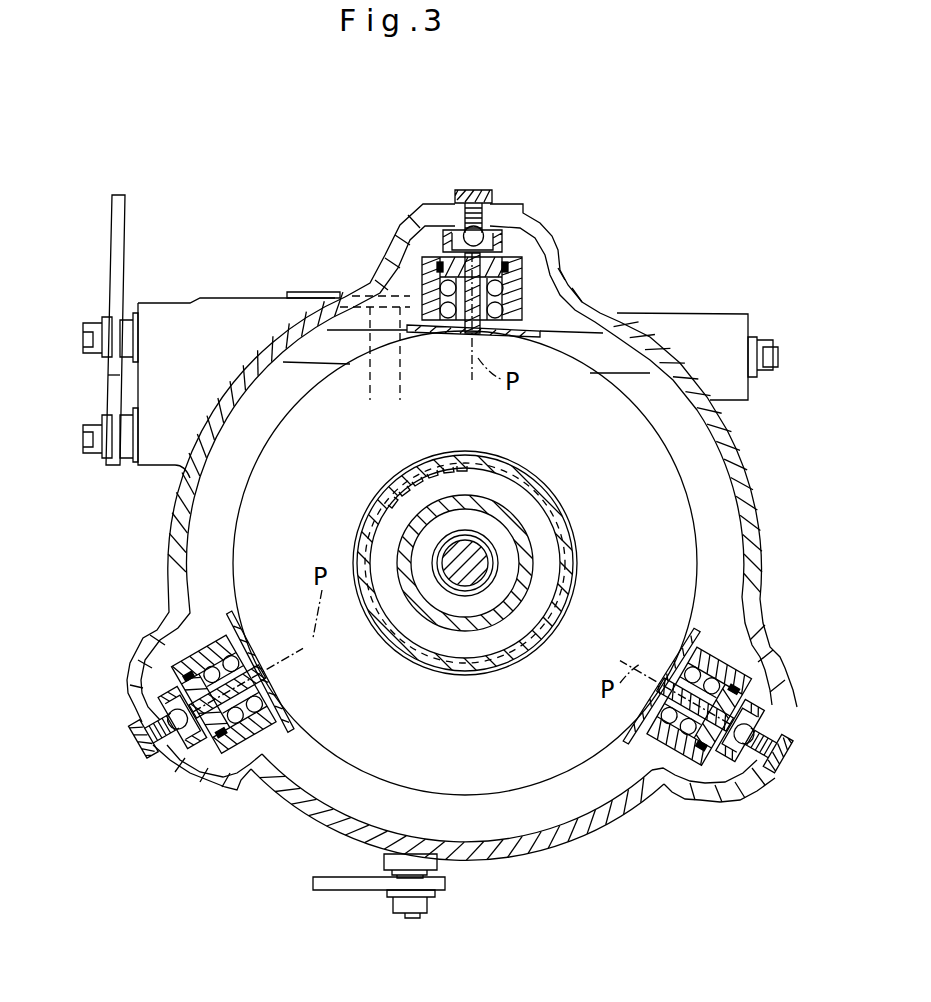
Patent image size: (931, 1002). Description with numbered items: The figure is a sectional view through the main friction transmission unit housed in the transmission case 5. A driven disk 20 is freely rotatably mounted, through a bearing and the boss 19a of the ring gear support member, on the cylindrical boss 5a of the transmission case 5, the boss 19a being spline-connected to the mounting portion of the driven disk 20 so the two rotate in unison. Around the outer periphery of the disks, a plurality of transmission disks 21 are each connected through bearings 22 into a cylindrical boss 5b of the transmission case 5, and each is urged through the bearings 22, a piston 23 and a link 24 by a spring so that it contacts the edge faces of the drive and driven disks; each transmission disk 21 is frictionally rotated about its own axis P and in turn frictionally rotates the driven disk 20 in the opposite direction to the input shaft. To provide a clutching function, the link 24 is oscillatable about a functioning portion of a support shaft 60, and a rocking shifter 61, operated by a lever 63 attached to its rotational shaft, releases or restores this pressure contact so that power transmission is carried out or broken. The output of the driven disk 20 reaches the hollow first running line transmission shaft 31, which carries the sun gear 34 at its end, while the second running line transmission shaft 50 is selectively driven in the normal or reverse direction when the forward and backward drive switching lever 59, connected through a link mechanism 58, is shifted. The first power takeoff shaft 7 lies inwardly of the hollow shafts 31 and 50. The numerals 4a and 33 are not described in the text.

The mounting portion 4a is at (367, 393).
The transmission case 5 is at (732, 442).
The cylindrical boss 5a is at (437, 507).
The cylindrical boss 5b is at (418, 255).
The first power takeoff shaft 7 is at (470, 580).
The boss 19a is at (493, 470).
The driven disk 20 is at (677, 503).
The transmission disk 21 is at (525, 328).
The bearing 22 is at (448, 325).
The piston 23 is at (441, 258).
The link 24 is at (502, 245).
The first running line transmission shaft 31 is at (447, 583).
The arm 33 is at (127, 323).
The sun gear 34 is at (118, 227).
The second running line transmission shaft 50 is at (300, 292).
The link mechanism 58 is at (423, 877).
The forward and backward drive switching lever 59 is at (323, 890).
The support shaft 60 is at (478, 236).
The rocking shifter 61 is at (127, 447).
The lever 63 is at (113, 466).